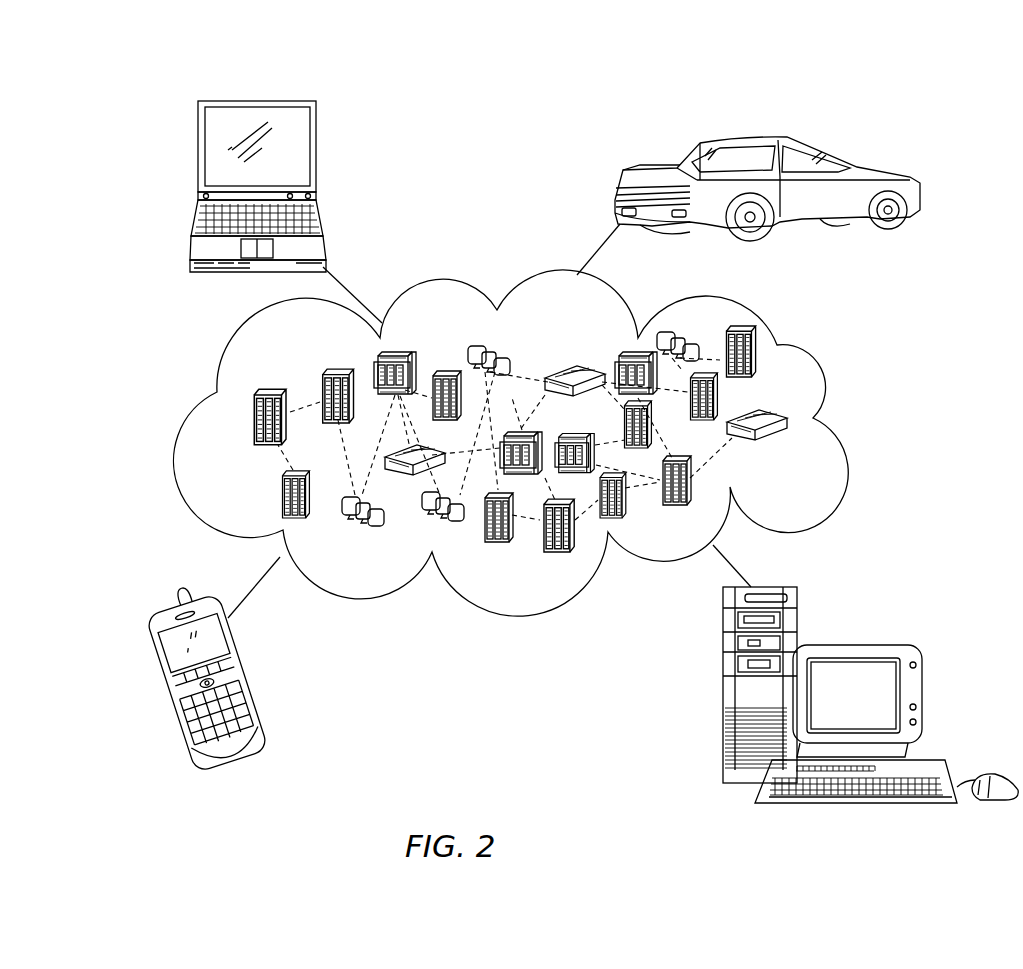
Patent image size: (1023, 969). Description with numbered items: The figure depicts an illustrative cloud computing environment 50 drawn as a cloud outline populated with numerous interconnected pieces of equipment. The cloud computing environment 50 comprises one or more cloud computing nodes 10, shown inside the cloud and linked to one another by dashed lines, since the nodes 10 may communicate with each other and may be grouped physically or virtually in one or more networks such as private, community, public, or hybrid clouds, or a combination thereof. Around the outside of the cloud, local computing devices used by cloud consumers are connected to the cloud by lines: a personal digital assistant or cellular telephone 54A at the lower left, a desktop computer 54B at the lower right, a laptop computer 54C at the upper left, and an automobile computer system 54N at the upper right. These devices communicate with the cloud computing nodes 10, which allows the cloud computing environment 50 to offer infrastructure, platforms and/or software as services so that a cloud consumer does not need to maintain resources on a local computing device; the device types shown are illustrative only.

The cloud computing environment 50 is at (818, 363).
The cloud computing nodes 10 is at (807, 468).
The personal digital assistant or cellular telephone 54A is at (158, 686).
The desktop computer 54B is at (868, 645).
The laptop computer 54C is at (218, 99).
The automobile computer system 54N is at (833, 170).